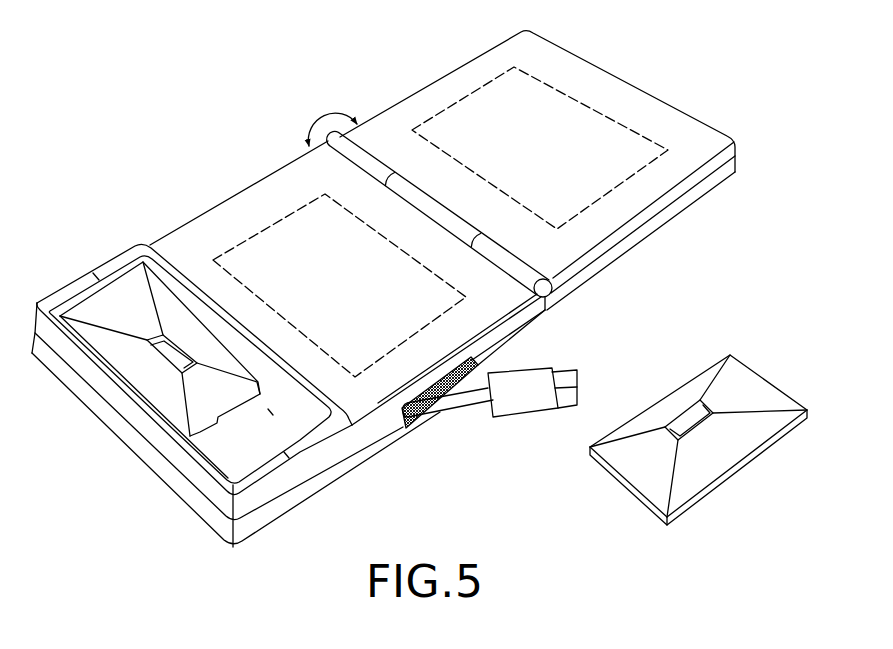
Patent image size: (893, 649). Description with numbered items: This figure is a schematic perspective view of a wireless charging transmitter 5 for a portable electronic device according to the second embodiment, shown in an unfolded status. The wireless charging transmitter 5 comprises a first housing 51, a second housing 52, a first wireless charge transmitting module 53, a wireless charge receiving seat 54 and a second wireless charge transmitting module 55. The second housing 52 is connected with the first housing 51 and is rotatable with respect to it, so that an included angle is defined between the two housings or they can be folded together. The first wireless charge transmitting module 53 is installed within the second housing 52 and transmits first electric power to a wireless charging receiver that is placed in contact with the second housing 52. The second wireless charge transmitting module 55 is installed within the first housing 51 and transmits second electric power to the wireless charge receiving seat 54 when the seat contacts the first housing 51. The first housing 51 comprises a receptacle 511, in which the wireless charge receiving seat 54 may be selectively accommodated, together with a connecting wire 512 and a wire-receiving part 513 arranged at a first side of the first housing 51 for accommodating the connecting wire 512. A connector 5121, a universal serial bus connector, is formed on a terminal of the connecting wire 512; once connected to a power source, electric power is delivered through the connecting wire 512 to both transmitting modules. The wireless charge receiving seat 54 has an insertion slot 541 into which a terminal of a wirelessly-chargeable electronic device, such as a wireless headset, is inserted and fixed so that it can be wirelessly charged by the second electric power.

The wireless charging transmitter 5 is at (218, 52).
The first housing 51 is at (297, 183).
The second housing 52 is at (462, 80).
The first wireless charge transmitting module 53 is at (573, 123).
The second wireless charge transmitting module 55 is at (257, 256).
The receptacle 511 is at (127, 303).
The connecting wire 512 is at (413, 407).
The wire-receiving part 513 is at (447, 389).
The connector 5121 is at (530, 382).
The wireless charge receiving seat 54 is at (750, 392).
The insertion slot 541 is at (697, 420).